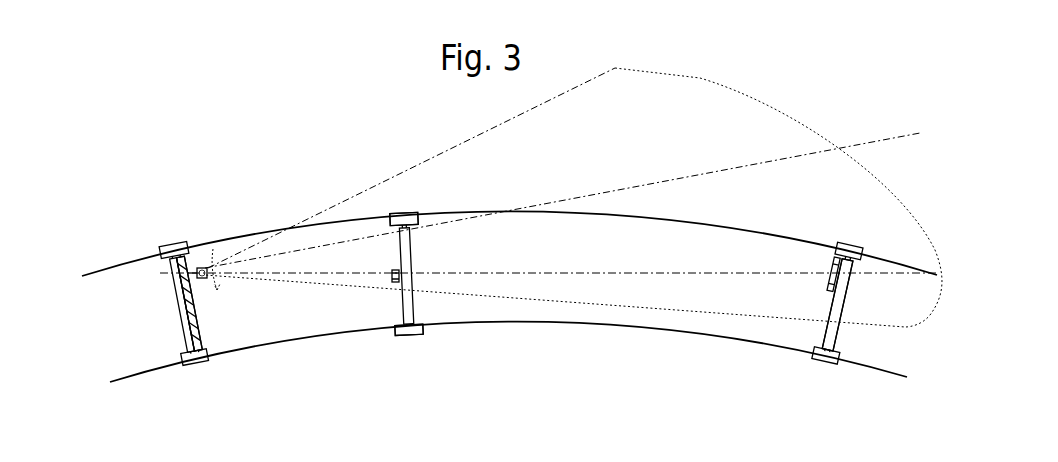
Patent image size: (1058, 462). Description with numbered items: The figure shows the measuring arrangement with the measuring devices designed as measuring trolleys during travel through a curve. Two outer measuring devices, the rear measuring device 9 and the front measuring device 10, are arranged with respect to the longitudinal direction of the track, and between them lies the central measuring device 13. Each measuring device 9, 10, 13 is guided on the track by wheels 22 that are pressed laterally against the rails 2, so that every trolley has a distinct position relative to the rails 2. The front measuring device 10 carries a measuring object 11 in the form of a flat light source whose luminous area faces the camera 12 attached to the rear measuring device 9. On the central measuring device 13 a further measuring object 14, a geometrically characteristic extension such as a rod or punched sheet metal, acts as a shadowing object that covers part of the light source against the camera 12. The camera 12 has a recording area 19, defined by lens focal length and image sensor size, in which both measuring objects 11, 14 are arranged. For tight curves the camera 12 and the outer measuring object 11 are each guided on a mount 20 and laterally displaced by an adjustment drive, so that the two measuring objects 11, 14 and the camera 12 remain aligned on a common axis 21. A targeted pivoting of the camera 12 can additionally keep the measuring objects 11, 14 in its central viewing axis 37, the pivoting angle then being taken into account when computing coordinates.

The rails 2 is at (150, 262).
The rear measuring device 9 is at (166, 296).
The front measuring device 10 is at (864, 298).
The measuring object 11 is at (836, 267).
The camera 12 is at (203, 281).
The central measuring device 13 is at (426, 267).
The further measuring object 14 is at (392, 274).
The recording area 19 is at (388, 170).
The mount 20 is at (187, 336).
The common axis 21 is at (583, 272).
The wheels 22 is at (418, 212).
The central viewing axis 37 is at (698, 178).